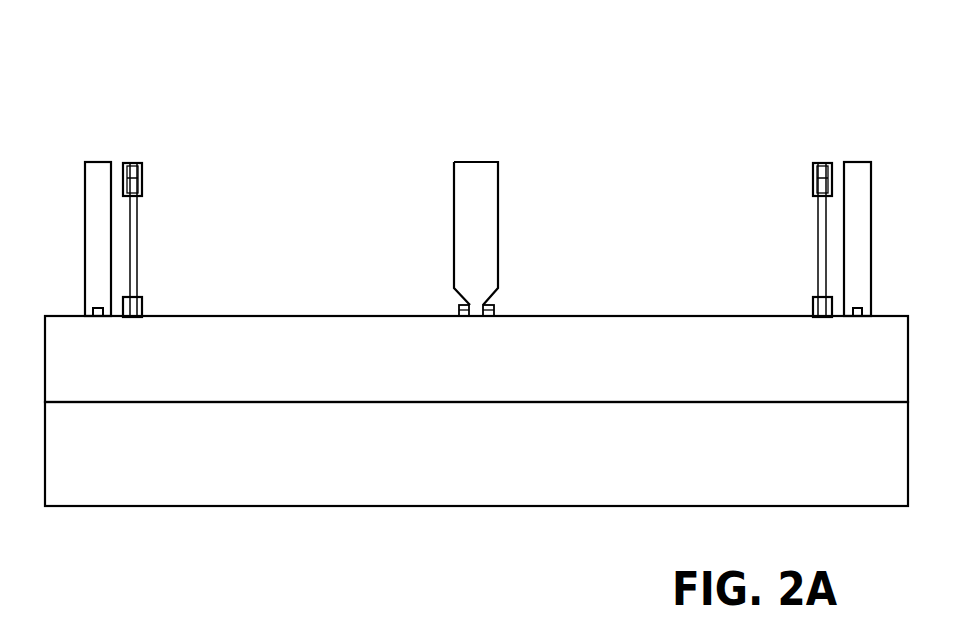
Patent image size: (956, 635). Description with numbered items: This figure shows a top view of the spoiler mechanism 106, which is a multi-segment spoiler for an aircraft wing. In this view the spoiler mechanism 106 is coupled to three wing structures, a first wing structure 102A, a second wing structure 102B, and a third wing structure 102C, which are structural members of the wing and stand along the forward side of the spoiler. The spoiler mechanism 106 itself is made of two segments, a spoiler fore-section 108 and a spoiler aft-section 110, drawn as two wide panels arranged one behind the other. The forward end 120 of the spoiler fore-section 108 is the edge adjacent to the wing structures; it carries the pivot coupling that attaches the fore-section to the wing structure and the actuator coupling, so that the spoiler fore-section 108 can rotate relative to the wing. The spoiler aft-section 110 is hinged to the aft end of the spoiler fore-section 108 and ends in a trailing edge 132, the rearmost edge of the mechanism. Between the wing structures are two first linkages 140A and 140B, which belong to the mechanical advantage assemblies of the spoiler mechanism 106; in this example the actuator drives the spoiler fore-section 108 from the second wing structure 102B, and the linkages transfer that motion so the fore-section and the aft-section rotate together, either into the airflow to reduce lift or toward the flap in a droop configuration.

The spoiler mechanism 106 is at (288, 78).
The first wing structure 102A is at (95, 162).
The second wing structure 102B is at (454, 170).
The third wing structure 102C is at (853, 162).
The first linkage 140A is at (137, 243).
The first linkage 140B is at (818, 268).
The forward end 120 is at (351, 302).
The spoiler fore-section 108 is at (223, 370).
The spoiler aft-section 110 is at (225, 468).
The trailing edge 132 is at (346, 525).